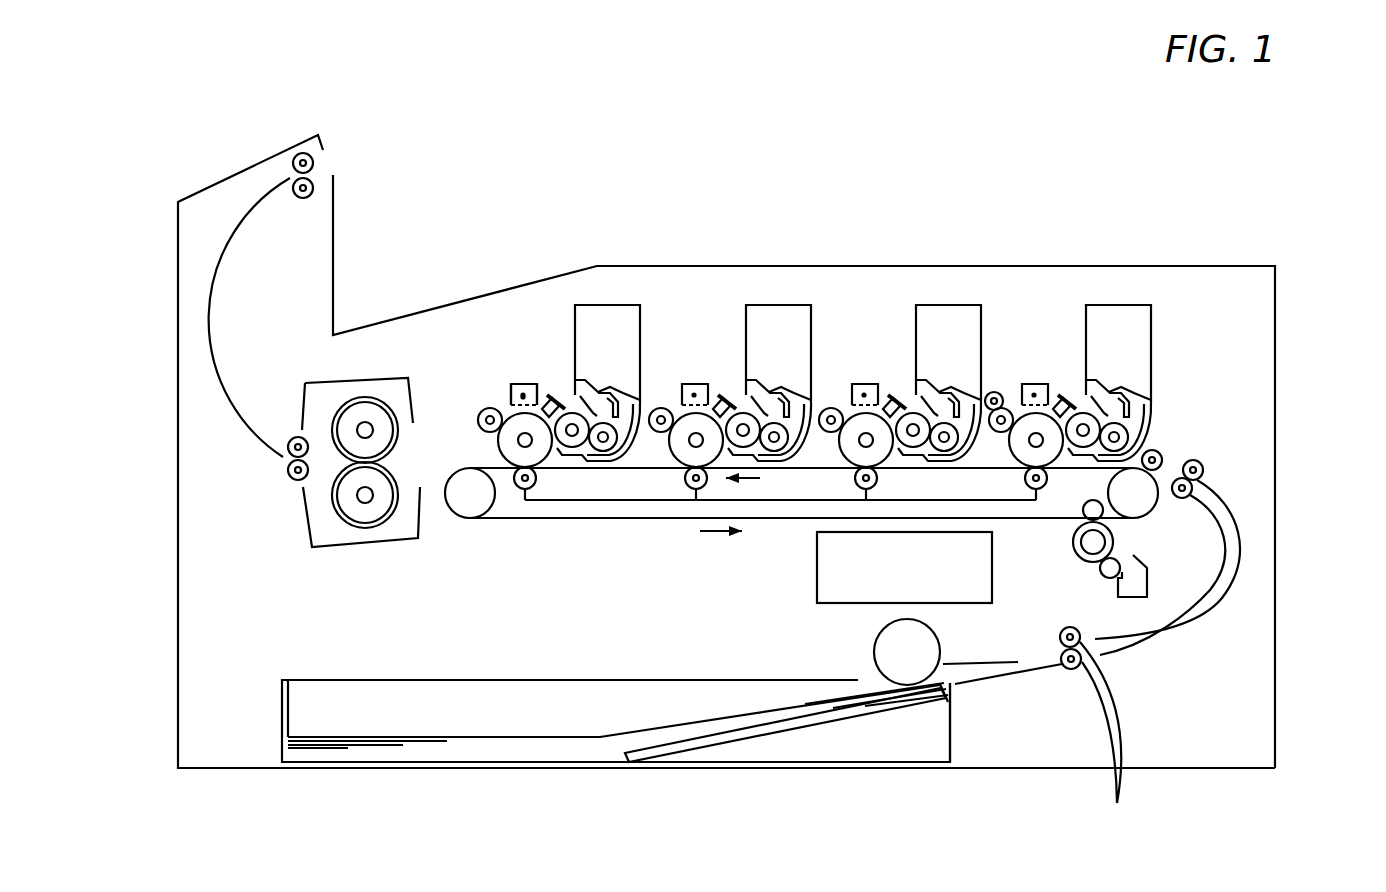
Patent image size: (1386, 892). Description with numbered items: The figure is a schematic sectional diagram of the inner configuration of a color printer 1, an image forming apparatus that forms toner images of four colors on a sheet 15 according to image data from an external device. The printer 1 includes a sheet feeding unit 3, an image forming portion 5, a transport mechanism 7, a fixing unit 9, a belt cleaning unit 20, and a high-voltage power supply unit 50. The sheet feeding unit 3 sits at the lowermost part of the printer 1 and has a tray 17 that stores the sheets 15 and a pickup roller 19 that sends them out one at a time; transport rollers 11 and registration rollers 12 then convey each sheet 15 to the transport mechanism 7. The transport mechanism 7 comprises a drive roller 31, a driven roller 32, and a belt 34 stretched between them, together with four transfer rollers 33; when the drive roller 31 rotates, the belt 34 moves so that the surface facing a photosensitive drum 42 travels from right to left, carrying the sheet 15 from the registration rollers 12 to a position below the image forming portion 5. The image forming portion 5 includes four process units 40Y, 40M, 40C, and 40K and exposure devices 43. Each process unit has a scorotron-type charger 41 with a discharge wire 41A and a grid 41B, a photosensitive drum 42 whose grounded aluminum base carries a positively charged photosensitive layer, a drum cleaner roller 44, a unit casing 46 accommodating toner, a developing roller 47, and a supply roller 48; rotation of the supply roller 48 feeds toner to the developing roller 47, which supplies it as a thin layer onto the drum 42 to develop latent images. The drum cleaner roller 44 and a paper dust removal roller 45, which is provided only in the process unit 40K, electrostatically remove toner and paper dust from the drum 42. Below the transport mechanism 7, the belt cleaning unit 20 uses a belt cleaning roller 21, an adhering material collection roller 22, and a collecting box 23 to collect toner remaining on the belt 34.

The color printer 1 is at (781, 163).
The sheet feeding unit 3 is at (466, 670).
The image forming portion 5 is at (1182, 316).
The transport mechanism 7 is at (824, 508).
The fixing unit 9 is at (302, 400).
The transport rollers 11 is at (1093, 731).
The registration rollers 12 is at (1195, 489).
The sheet 15 is at (615, 745).
The tray 17 is at (953, 722).
The pickup roller 19 is at (910, 668).
The belt cleaning unit 20 is at (1162, 559).
The belt cleaning roller 21 is at (1075, 545).
The adhering material collection roller 22 is at (1103, 578).
The collecting box 23 is at (1152, 583).
The drive roller 31 is at (472, 500).
The driven roller 32 is at (1168, 478).
The transfer rollers 33 is at (1043, 490).
The belt 34 is at (637, 520).
The process unit (cyan) 40C is at (562, 343).
The process unit (magenta) 40M is at (768, 350).
The process unit (yellow) 40Y is at (948, 295).
The process unit (black) 40K is at (1108, 388).
The charger 41 is at (503, 362).
The discharge wire 41A is at (523, 398).
The grid 41B is at (507, 403).
The photosensitive drum 42 is at (497, 440).
The exposure device 43 is at (565, 393).
The drum cleaner roller 44 is at (480, 412).
The paper dust removal roller 45 is at (997, 392).
The unit casing 46 is at (590, 304).
The developing roller 47 is at (742, 412).
The supply roller 48 is at (778, 423).
The high-voltage power supply unit 50 is at (797, 603).